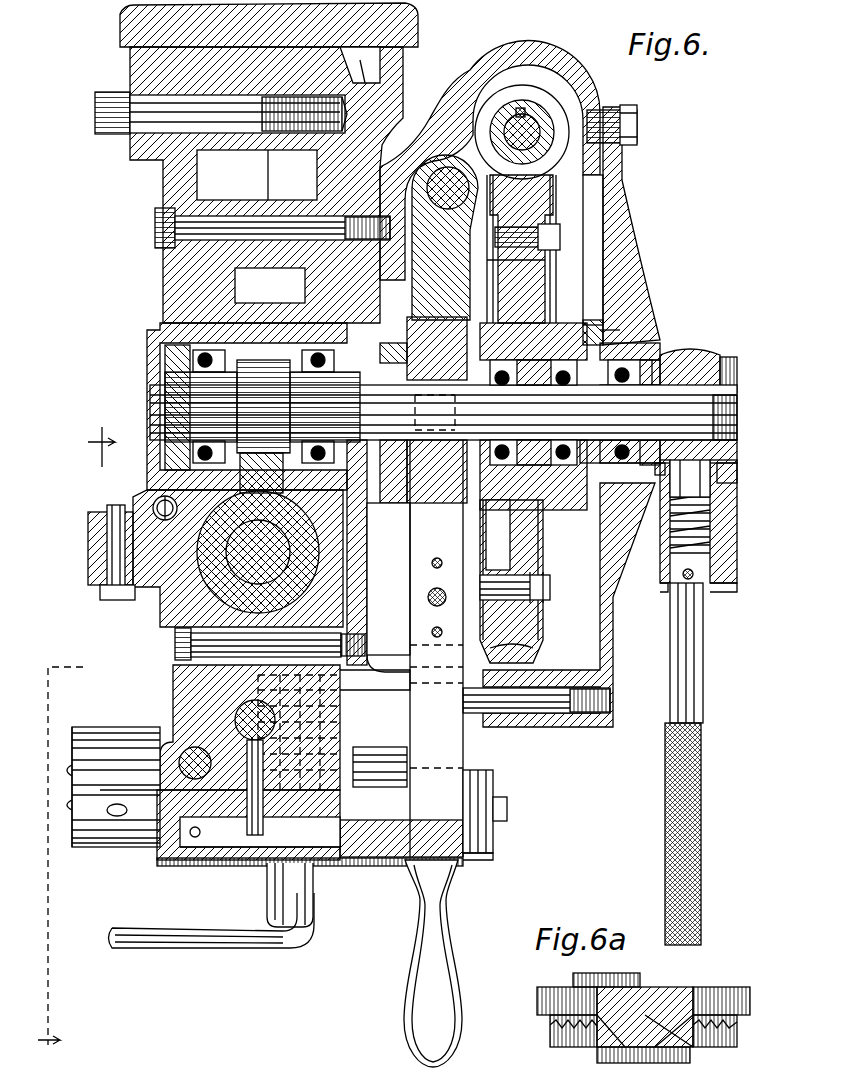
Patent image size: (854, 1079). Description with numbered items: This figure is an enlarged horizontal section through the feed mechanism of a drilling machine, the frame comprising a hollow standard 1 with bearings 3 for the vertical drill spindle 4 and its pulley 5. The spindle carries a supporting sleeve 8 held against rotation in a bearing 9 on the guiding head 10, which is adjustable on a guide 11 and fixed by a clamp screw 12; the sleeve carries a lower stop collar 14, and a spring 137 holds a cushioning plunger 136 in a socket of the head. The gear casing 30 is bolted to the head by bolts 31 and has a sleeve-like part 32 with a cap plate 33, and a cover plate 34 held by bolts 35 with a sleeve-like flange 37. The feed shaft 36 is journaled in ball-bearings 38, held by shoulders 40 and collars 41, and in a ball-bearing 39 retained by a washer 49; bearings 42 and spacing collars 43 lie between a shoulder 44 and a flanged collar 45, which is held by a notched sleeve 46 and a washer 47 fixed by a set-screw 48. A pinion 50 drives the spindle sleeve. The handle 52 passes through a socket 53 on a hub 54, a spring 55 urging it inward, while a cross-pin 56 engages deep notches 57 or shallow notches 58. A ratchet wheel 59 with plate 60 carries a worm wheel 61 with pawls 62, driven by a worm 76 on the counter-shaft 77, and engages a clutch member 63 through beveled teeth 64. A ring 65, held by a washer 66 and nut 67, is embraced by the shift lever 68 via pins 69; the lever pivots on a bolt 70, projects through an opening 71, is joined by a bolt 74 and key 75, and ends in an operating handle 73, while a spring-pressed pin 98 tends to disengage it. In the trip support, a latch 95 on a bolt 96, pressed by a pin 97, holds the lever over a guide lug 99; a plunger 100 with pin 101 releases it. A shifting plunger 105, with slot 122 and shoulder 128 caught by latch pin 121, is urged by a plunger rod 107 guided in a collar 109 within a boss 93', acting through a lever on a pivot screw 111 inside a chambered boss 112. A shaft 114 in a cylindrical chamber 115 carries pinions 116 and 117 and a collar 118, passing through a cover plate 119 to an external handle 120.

In FIG. 6, the standard 1 is at (420, 33).
In FIG. 6, the guiding head 10 is at (170, 268).
In FIG. 6, the guide 11 is at (412, 72).
In FIG. 6, the clamp screw 12 is at (165, 115).
In FIG. 6, the bolts 31 is at (178, 225).
In FIG. 6, the pivot bolt 70 is at (433, 160).
In FIG. 6, the shift lever 68 is at (445, 237).
In FIG. 6, the counter-shaft 77 is at (510, 100).
In FIG. 6, the worm 76 is at (537, 115).
In FIG. 6, the worm wheel 61 is at (532, 210).
In FIG. 6, the pawls 62 is at (548, 240).
In FIG. 6, the teeth 64 is at (545, 262).
In FIG. 6A, the teeth 64 is at (620, 990).
In FIG. 6, the ratchet wheel 59 is at (590, 275).
In FIG. 6A, the ratchet wheel 59 is at (730, 990).
In FIG. 6, the cover plate 34 is at (640, 278).
In FIG. 6, the bolts 35 is at (640, 128).
In FIG. 6, the plate 60 is at (605, 330).
In FIG. 6, the sleeve-like flange 37 is at (625, 343).
In FIG. 6, the ball-bearing 39 is at (655, 345).
In FIG. 6, the hub 54 is at (715, 357).
In FIG. 6, the set-screw 48 is at (740, 378).
In FIG. 6, the flanged collar 45 is at (443, 412).
In FIG. 6, the feed shaft 36 is at (740, 408).
In FIG. 6, the sleeve 46 is at (740, 452).
In FIG. 6, the disk or washer 47 is at (740, 475).
In FIG. 6, the washer 49 is at (660, 468).
In FIG. 6, the shallow notches 58 is at (720, 590).
In FIG. 6, the spring 55 is at (712, 522).
In FIG. 6, the socket 53 is at (712, 558).
In FIG. 6, the cross-pin 56 is at (694, 574).
In FIG. 6, the deep notches 57 is at (705, 603).
In FIG. 6, the handle 52 is at (695, 655).
In FIG. 6, the casing 30 is at (608, 650).
In FIG. 6, the spring-pressed pin 98 is at (540, 703).
In FIG. 6, the clutch member 63 is at (480, 478).
In FIG. 6A, the clutch member 63 is at (735, 1045).
In FIG. 6, the pins 69 is at (415, 410).
In FIG. 6, the shoulder 44 is at (500, 412).
In FIG. 6, the ball-bearings 42 is at (525, 397).
In FIG. 6, the spacing collars 43 is at (541, 421).
In FIG. 6, the cap plate 33 is at (148, 398).
In FIG. 6, the collars 41 is at (165, 360).
In FIG. 6, the sleeve-like part 32 is at (205, 330).
In FIG. 6, the ball-bearings 38 is at (245, 330).
In FIG. 6, the pinion 50 is at (263, 360).
In FIG. 6, the shoulders 40 is at (262, 407).
In FIG. 6, the pulley 5 is at (261, 473).
In FIG. 6, the bearings 3 is at (74, 739).
In FIG. 6, the drill spindle 4 is at (238, 558).
In FIG. 6, the plunger 136 is at (152, 507).
In FIG. 6, the spring 137 is at (150, 497).
In FIG. 6, the lower stop collar 14 is at (118, 595).
In FIG. 6, the supporting sleeve 8 is at (175, 590).
In FIG. 6, the bearing 9 is at (190, 595).
In FIG. 6, the latch 95 is at (175, 690).
In FIG. 6, the plunger 100 is at (176, 717).
In FIG. 6, the latch pin 121 is at (160, 757).
In FIG. 6, the cylindrical chamber 115 is at (72, 748).
In FIG. 6, the shoulder 128 is at (158, 785).
In FIG. 6, the chambered boss 112 is at (95, 843).
In FIG. 6, the pivot screw 111 is at (118, 815).
In FIG. 6, the spring-pressed pin 97 is at (195, 862).
In FIG. 6, the slot 122 is at (260, 832).
In FIG. 6, the cover plate 119 is at (220, 868).
In FIG. 6, the pin 101 is at (253, 845).
In FIG. 6, the shaft 114 is at (310, 905).
In FIG. 6, the handle 120 is at (230, 948).
In FIG. 6, the bolt 96 is at (345, 866).
In FIG. 6, the plate or washer 66 is at (372, 505).
In FIG. 6, the nut 67 is at (388, 500).
In FIG. 6, the ring 65 is at (420, 520).
In FIG. 6, the opening 71 is at (398, 668).
In FIG. 6, the key 75 is at (431, 563).
In FIG. 6, the bolt 74 is at (428, 598).
In FIG. 6, the collar 118 is at (370, 690).
In FIG. 6, the pinion 116 is at (380, 736).
In FIG. 6, the pinion 117 is at (396, 737).
In FIG. 6, the shifting plunger 105 is at (407, 755).
In FIG. 6, the collar 109 is at (495, 795).
In FIG. 6, the plunger rod 107 is at (508, 810).
In FIG. 6, the boss 93' is at (514, 852).
In FIG. 6, the guide lug 99 is at (478, 860).
In FIG. 6, the operating handle 73 is at (443, 957).